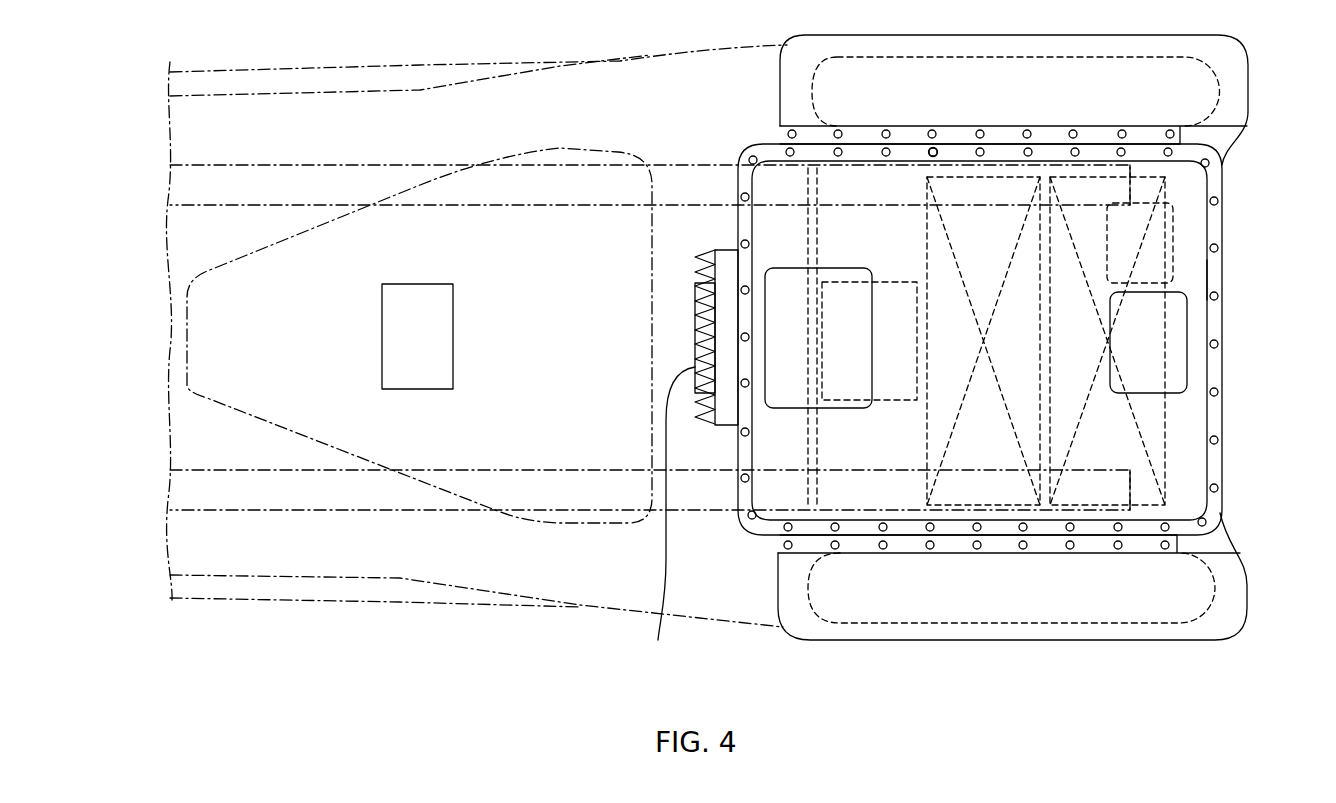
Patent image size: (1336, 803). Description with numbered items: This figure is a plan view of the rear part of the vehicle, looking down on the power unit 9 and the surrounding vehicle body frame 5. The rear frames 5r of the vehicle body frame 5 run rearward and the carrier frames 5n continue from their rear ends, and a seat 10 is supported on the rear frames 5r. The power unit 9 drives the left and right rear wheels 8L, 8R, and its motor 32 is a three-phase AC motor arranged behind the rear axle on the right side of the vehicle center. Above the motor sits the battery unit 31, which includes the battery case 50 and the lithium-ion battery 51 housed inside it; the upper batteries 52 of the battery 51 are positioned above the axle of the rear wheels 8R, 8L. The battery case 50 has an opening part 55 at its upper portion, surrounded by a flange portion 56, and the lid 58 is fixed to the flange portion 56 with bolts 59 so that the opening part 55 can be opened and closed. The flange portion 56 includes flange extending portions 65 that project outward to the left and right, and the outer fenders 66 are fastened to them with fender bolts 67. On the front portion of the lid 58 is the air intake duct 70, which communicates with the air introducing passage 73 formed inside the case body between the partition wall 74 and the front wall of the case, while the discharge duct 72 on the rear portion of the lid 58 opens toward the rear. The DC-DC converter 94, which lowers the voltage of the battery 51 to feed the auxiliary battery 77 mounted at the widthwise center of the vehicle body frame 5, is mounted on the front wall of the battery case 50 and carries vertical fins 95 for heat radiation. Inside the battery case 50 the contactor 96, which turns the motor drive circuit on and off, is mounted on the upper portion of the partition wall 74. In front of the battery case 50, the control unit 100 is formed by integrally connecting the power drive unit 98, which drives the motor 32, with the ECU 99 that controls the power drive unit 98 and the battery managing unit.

The vehicle body frame 5 is at (476, 336).
The rear frames 5r is at (600, 163).
The carrier frames 5n is at (862, 168).
The right rear wheel 8R is at (1250, 110).
The left rear wheel 8L is at (1242, 606).
The power unit 9 is at (1255, 402).
The seat 10 is at (458, 166).
The battery unit 31 is at (1200, 223).
The motor 32 is at (1173, 240).
The battery case 50 is at (1254, 280).
The battery 51 is at (1081, 254).
The upper batteries 52 is at (1033, 135).
The opening part 55 is at (1203, 177).
The flange portion 56 is at (997, 155).
The lid 58 is at (1188, 276).
The bolts 59 is at (940, 150).
The flange extending portions 65 is at (1095, 137).
The outer fenders 66 is at (1235, 48).
The fender bolts 67 is at (932, 130).
The air intake duct 70 is at (848, 268).
The discharge duct 72 is at (1188, 333).
The air introducing passage 73 is at (793, 251).
The partition wall 74 is at (818, 243).
The auxiliary battery 77 is at (453, 337).
The DC-DC converter 94 is at (728, 250).
The vertical fins 95 is at (702, 257).
The contactor 96 is at (892, 398).
The power drive unit 98 is at (701, 519).
The ECU 99 is at (701, 519).
The control unit 100 is at (701, 519).